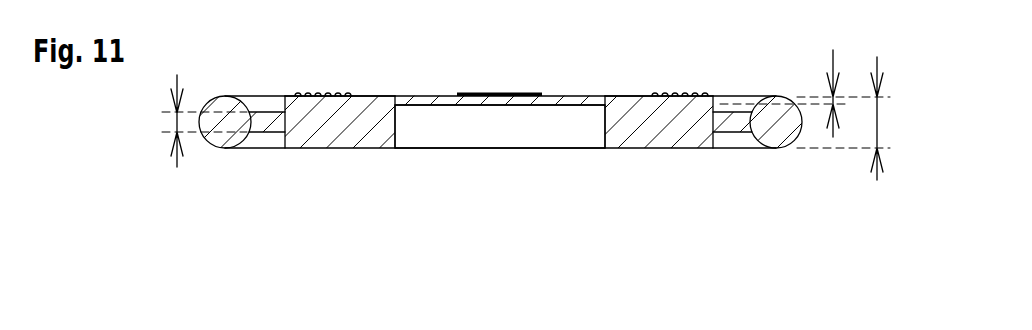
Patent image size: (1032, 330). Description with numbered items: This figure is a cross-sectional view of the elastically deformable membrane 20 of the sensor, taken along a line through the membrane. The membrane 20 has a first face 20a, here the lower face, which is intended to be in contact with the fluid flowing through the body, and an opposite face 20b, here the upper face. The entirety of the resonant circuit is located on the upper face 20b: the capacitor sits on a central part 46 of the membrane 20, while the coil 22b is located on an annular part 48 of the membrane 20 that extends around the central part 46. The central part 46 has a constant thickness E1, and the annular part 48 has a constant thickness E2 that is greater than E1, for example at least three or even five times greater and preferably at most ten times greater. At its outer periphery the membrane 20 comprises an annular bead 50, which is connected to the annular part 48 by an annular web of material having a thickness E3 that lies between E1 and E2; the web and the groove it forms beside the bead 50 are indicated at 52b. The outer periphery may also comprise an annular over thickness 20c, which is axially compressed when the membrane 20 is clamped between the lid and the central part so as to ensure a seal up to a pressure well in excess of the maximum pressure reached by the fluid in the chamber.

The elastically deformable membrane 20 is at (664, 42).
The first face 20a is at (430, 105).
The face 20b is at (372, 96).
The annular over thickness 20c is at (525, 95).
The coil 22b is at (318, 96).
The central part 46 is at (593, 78).
The annular part 48 is at (395, 163).
The annular bead 50 is at (214, 143).
The groove 52b is at (267, 117).
The thickness of the central part E1 is at (833, 62).
The thickness of the annular part E2 is at (855, 118).
The thickness of the annular web E3 is at (174, 121).